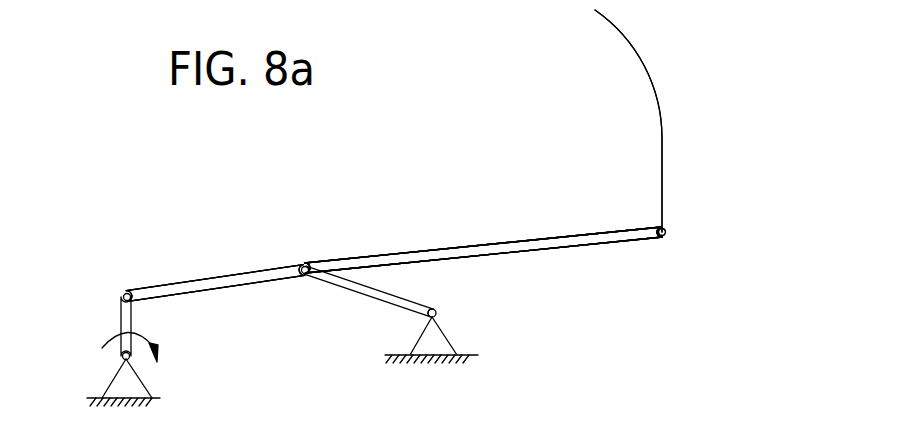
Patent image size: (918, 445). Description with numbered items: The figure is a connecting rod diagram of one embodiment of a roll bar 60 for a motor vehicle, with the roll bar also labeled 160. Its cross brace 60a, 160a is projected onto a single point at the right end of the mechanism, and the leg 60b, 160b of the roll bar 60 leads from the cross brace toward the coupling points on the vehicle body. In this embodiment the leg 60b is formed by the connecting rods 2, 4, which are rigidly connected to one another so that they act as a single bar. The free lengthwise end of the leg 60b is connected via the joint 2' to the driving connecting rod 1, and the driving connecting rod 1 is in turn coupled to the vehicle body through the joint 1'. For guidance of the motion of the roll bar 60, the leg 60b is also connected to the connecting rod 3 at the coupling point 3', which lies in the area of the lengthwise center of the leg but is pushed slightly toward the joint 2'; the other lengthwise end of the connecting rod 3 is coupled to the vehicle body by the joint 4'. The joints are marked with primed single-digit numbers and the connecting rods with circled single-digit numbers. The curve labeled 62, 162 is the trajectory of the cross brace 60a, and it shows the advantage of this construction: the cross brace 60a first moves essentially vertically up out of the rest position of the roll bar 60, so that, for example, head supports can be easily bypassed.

The driving connecting rod 1 is at (102, 329).
The joint 1' is at (109, 380).
The connecting rod 2 is at (215, 257).
The joint 2' is at (104, 275).
The connecting rod 3 is at (369, 307).
The coupling point 3' is at (302, 244).
The connecting rod 4 is at (484, 225).
The joint 4' is at (437, 321).
The roll bar 60 is at (375, 248).
The lever 160 is at (375, 248).
The cross brace 60a is at (667, 231).
The lever end pivot 160a is at (667, 231).
The leg 60b is at (560, 243).
The lever arm portion 160b is at (560, 243).
The trajectory 62 is at (652, 85).
The guide path / arc of lever end 162 is at (652, 85).